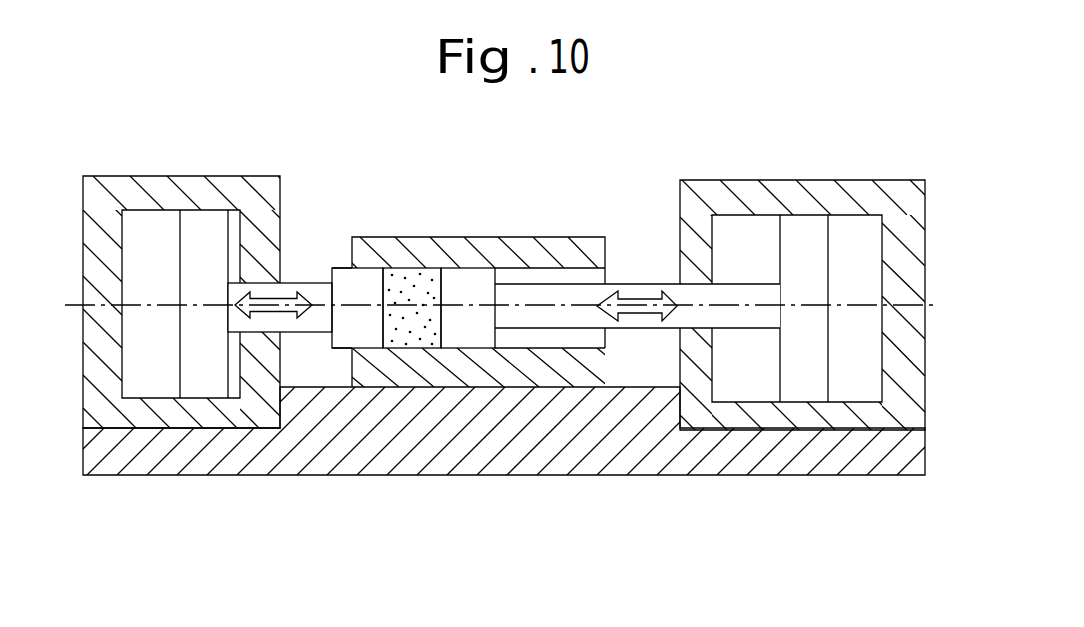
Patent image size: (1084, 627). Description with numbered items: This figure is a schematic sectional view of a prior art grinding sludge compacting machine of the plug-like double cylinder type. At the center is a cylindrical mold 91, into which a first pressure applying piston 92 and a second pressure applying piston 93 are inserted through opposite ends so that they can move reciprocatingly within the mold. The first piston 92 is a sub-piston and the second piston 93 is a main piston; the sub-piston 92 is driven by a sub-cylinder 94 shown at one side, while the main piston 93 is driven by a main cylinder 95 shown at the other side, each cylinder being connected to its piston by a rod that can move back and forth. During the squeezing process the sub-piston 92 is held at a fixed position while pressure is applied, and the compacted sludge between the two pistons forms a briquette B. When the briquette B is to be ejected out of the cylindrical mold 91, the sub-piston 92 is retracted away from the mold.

The cylindrical mold 91 is at (583, 247).
The first pressure applying piston 92 is at (357, 287).
The second pressure applying piston 93 is at (480, 283).
The sub-cylinder 94 is at (172, 200).
The main cylinder 95 is at (783, 196).
The briquette B is at (430, 278).